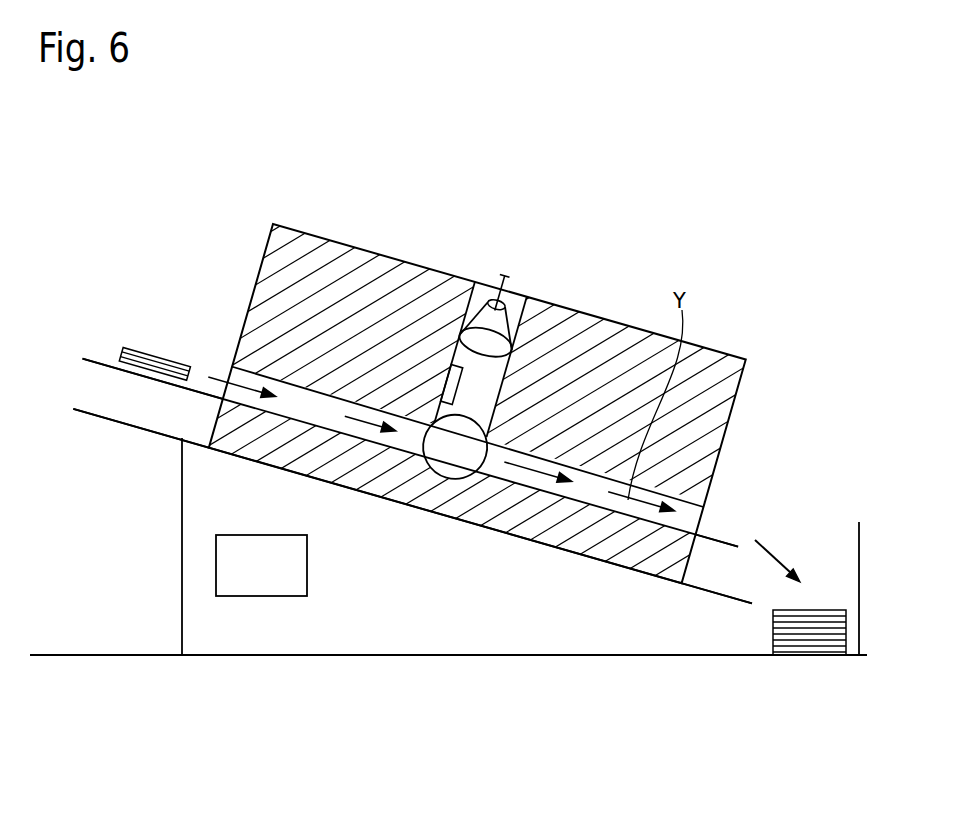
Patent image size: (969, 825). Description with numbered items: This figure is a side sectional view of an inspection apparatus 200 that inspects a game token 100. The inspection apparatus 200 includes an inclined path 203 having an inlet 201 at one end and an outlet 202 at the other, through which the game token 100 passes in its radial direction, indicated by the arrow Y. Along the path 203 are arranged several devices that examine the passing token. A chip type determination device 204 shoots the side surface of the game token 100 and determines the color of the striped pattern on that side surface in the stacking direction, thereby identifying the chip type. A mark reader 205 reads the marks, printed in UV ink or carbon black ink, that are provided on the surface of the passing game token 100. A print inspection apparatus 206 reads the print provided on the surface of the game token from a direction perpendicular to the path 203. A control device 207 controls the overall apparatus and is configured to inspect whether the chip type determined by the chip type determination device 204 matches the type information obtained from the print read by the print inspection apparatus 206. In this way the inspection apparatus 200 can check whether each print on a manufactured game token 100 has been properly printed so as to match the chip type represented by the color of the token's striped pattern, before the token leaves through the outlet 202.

The game token 100 is at (153, 357).
The inspection apparatus 200 is at (308, 240).
The inlet 201 is at (232, 382).
The outlet 202 is at (702, 517).
The path 203 is at (310, 402).
The chip type determination device 204 is at (450, 465).
The mark reader 205 is at (450, 393).
The print inspection apparatus 206 is at (517, 297).
The control device 207 is at (258, 573).